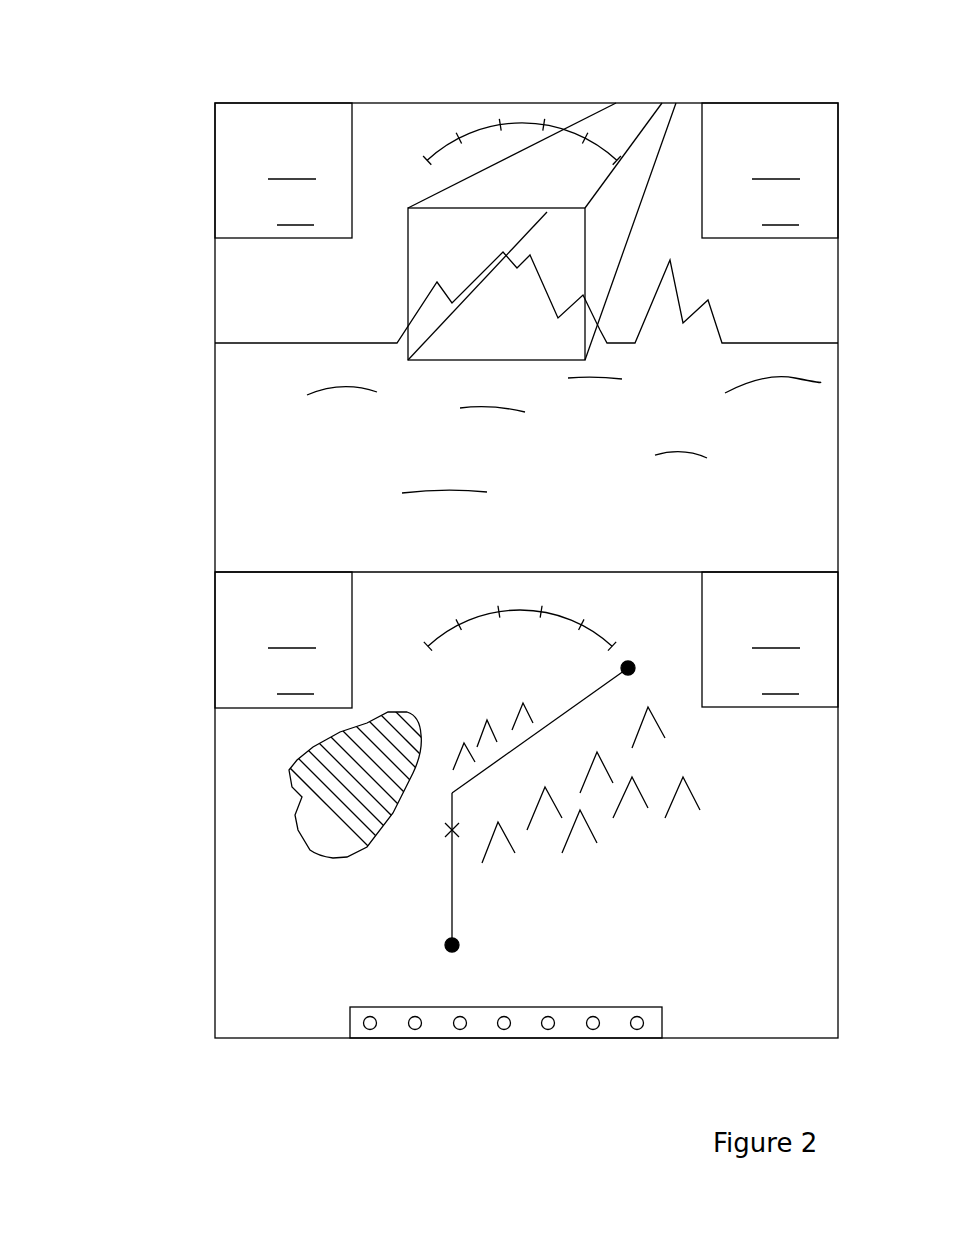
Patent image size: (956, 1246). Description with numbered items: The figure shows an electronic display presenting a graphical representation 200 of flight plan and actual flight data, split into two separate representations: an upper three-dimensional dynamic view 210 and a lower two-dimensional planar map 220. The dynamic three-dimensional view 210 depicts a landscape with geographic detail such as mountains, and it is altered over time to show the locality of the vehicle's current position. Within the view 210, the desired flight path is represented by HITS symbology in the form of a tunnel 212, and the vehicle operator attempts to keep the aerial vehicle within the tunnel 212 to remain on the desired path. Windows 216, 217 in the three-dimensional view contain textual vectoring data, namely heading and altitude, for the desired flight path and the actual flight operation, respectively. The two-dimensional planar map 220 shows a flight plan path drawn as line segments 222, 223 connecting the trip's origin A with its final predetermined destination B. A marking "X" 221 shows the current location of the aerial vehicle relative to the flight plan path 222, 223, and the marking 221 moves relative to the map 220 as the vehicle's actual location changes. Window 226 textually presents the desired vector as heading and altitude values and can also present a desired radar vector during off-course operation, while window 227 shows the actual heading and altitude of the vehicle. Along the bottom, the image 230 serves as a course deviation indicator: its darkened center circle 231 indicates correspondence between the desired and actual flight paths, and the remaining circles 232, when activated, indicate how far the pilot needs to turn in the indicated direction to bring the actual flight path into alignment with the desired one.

The graphical representation 200 is at (110, 355).
The three-dimensional dynamic view 210 is at (838, 438).
The tunnel 212 is at (617, 195).
The window 216 is at (260, 100).
The window 217 is at (803, 103).
The two-dimensional planar map 220 is at (838, 776).
The marking "X" 221 is at (447, 835).
The line segment 222 is at (452, 895).
The line segment 223 is at (582, 703).
The window 226 is at (215, 643).
The window 227 is at (838, 615).
The course deviation indicator 230 is at (613, 1008).
The center circle 231 is at (504, 1030).
The remaining circles 232 is at (457, 1030).